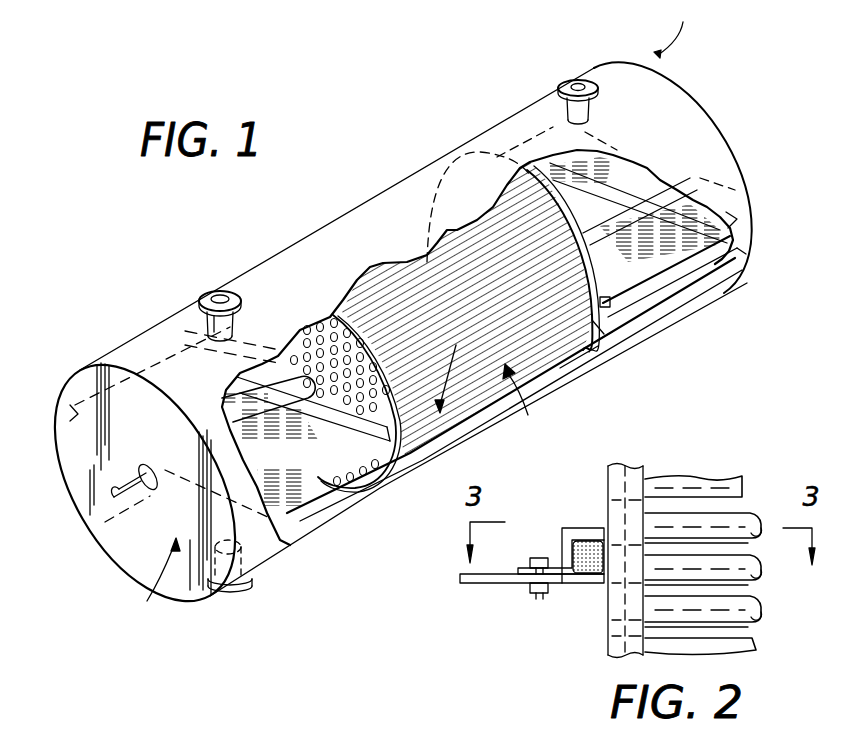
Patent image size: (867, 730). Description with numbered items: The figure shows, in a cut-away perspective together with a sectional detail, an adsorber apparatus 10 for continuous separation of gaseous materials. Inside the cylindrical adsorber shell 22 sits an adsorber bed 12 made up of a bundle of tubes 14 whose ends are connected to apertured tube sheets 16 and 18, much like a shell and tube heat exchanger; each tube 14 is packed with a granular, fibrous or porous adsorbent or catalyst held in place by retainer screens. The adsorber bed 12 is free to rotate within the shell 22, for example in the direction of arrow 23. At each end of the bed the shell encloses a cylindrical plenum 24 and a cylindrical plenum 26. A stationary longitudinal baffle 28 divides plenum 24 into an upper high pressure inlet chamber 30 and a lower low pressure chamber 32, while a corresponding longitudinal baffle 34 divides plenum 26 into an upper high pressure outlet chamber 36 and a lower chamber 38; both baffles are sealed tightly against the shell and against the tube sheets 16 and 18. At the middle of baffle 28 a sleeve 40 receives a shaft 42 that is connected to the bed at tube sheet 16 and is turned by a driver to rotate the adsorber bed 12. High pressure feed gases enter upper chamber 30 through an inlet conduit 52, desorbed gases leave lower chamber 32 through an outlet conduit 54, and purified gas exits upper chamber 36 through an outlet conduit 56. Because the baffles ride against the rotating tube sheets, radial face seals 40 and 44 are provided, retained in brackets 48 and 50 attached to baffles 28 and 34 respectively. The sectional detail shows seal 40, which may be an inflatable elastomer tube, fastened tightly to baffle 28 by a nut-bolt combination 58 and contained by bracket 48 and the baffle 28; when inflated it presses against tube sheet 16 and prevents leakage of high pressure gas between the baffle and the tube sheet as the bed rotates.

In FIG. 1, the adsorber apparatus 10 is at (671, 29).
In FIG. 1, the adsorber bed 12 is at (467, 308).
In FIG. 1, the tubes 14 is at (462, 413).
In FIG. 2, the tubes 14 is at (737, 518).
In FIG. 1, the tube sheet 16 is at (330, 318).
In FIG. 2, the tube sheet 16 is at (617, 613).
In FIG. 1, the tube sheet 18 is at (598, 345).
In FIG. 1, the adsorber shell 22 is at (341, 230).
In FIG. 1, the arrow 23 is at (458, 364).
In FIG. 1, the cylindrical plenum 24 is at (211, 505).
In FIG. 1, the cylindrical plenum 26 is at (670, 97).
In FIG. 1, the longitudinal baffle 28 is at (74, 410).
In FIG. 2, the longitudinal baffle 28 is at (490, 582).
In FIG. 1, the upper high pressure inlet chamber 30 is at (142, 357).
In FIG. 1, the lower low pressure chamber 32 is at (126, 546).
In FIG. 1, the longitudinal baffle 34 is at (727, 253).
In FIG. 1, the upper high pressure outlet chamber 36 is at (608, 178).
In FIG. 1, the lower chamber 38 is at (683, 273).
In FIG. 1, the radial face seal 40 is at (120, 486).
In FIG. 2, the radial face seal 40 is at (597, 578).
In FIG. 1, the shaft 42 is at (100, 524).
In FIG. 1, the radial face seal 44 is at (604, 312).
In FIG. 1, the bracket 48 is at (357, 437).
In FIG. 2, the bracket 48 is at (567, 535).
In FIG. 1, the bracket 50 is at (606, 296).
In FIG. 1, the inlet conduit 52 is at (220, 296).
In FIG. 1, the outlet conduit 54 is at (244, 587).
In FIG. 1, the outlet conduit 56 is at (578, 86).
In FIG. 2, the nut-bolt combination 58 is at (547, 600).